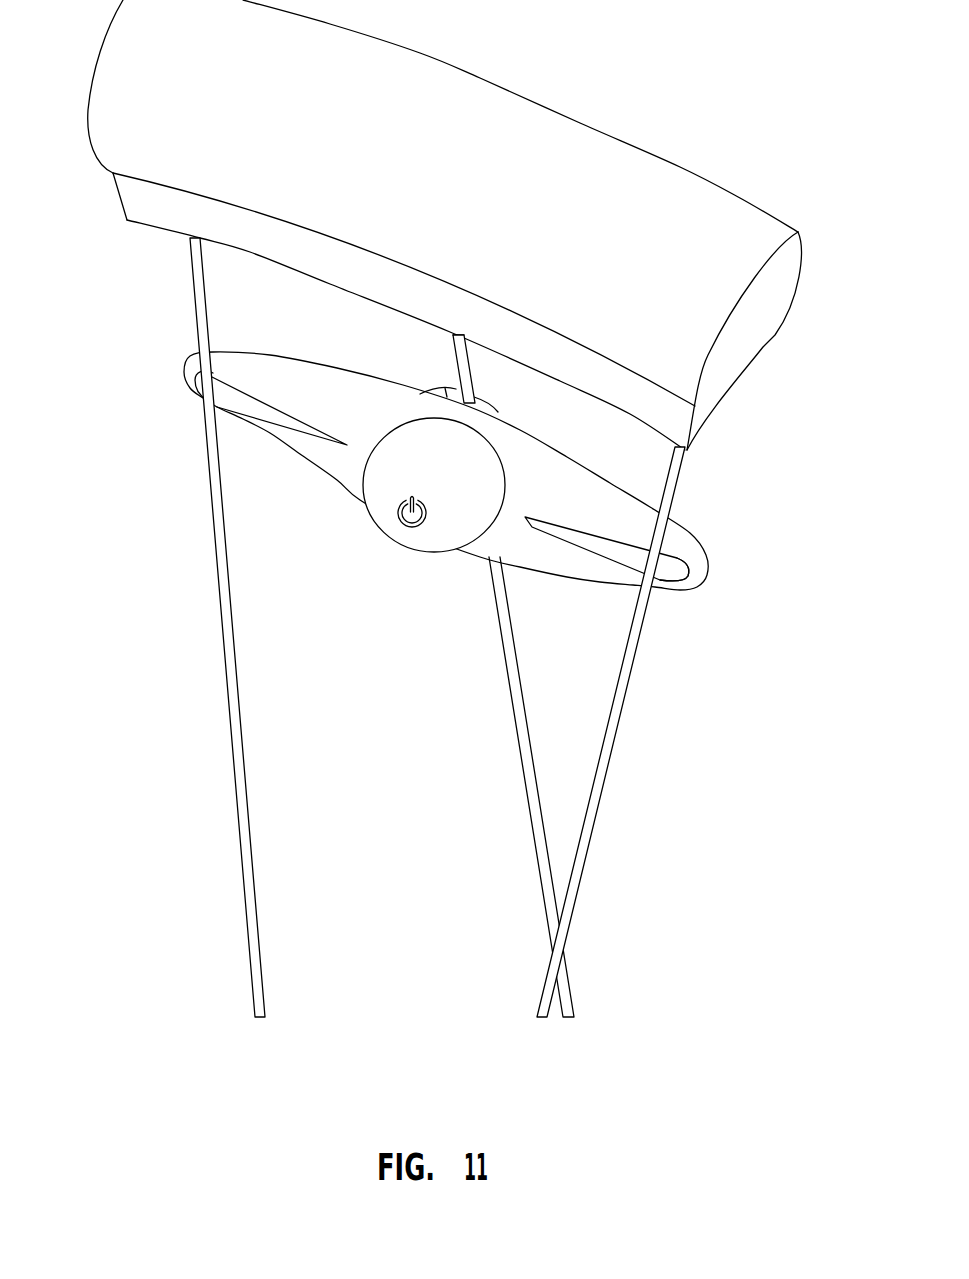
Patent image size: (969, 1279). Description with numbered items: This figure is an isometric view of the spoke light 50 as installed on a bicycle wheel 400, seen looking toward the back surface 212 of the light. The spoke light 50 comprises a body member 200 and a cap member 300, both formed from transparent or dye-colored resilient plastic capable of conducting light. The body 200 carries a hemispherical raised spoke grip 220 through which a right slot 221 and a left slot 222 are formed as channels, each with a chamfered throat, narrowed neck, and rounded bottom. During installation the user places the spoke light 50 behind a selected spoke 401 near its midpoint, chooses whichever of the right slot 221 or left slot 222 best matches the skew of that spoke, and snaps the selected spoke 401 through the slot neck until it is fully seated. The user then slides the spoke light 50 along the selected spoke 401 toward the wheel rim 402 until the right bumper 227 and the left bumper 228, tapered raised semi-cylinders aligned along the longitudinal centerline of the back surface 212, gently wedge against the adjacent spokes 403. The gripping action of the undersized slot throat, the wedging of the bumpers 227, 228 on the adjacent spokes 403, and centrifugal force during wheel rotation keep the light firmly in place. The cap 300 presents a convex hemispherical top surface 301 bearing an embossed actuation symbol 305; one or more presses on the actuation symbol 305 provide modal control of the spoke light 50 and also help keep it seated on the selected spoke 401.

The spoke light 50 is at (353, 357).
The body member 200 is at (437, 486).
The back surface 212 is at (565, 492).
The spoke grip 220 is at (500, 407).
The right slot 221 is at (454, 378).
The left slot 222 is at (487, 393).
The right bumper 227 is at (199, 390).
The left bumper 228 is at (673, 577).
The cap member 300 is at (398, 509).
The top surface 301 is at (470, 488).
The actuation symbol 305 is at (405, 524).
The wheel 400 is at (445, 225).
The selected spoke 401 is at (515, 677).
The wheel rim 402 is at (622, 395).
The adjacent spokes 403 is at (235, 666).